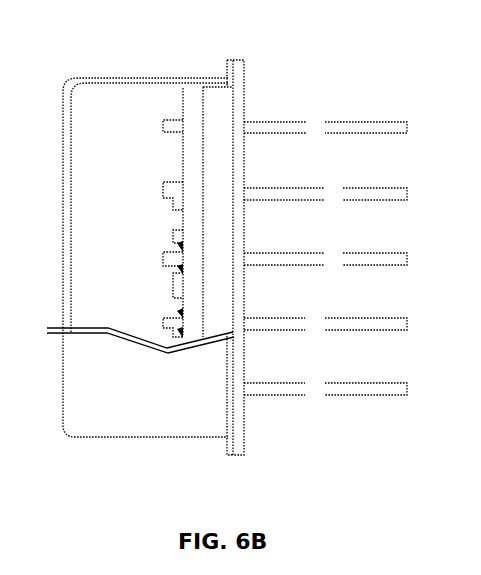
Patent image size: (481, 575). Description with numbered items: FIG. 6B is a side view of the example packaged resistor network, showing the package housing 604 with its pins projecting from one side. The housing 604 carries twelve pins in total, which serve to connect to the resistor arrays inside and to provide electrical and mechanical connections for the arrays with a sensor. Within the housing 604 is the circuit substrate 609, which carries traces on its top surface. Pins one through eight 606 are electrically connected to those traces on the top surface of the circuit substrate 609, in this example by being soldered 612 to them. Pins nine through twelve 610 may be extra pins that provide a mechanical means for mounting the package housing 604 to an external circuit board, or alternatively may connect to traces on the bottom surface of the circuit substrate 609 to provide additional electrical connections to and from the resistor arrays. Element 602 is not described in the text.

The solder joints 602 is at (175, 292).
The package housing 604 is at (77, 80).
The pins 1-8 606 is at (167, 327).
The circuit substrate 609 is at (191, 92).
The pins 9-12 610 is at (163, 127).
The solder 612 is at (138, 338).